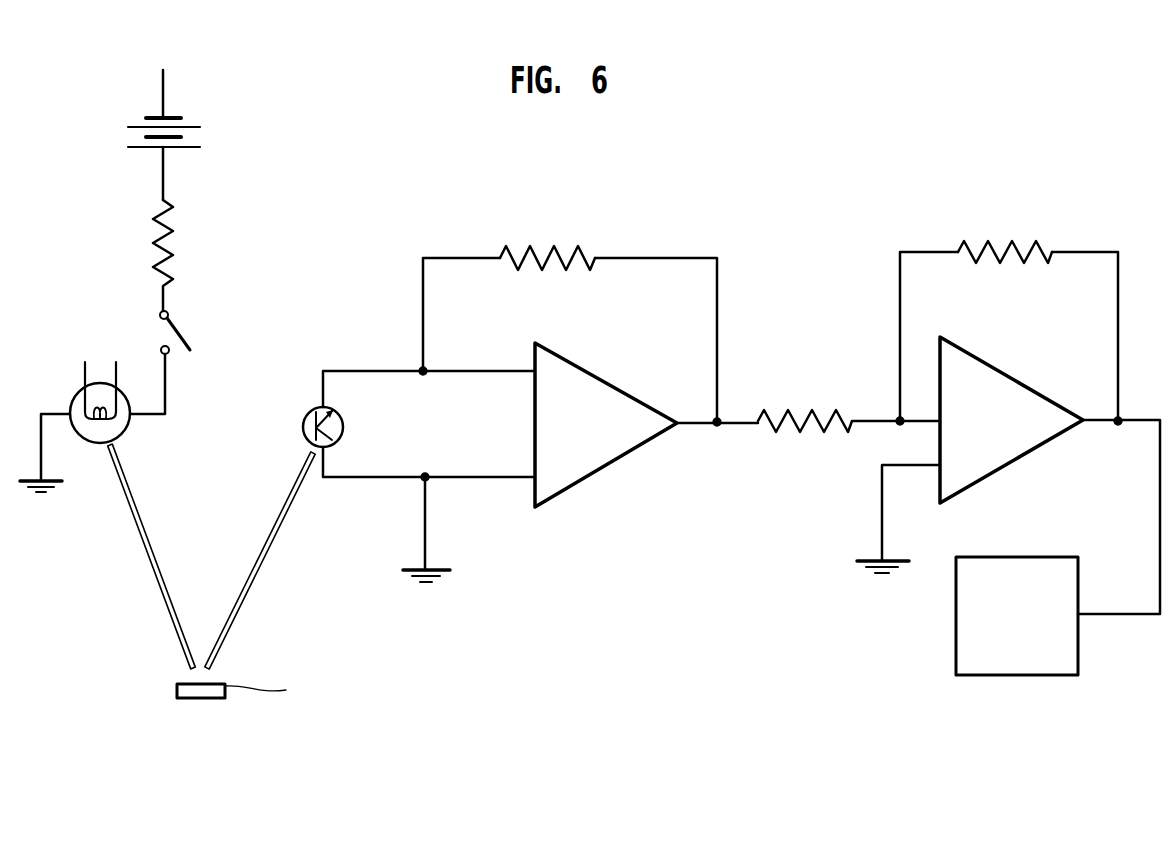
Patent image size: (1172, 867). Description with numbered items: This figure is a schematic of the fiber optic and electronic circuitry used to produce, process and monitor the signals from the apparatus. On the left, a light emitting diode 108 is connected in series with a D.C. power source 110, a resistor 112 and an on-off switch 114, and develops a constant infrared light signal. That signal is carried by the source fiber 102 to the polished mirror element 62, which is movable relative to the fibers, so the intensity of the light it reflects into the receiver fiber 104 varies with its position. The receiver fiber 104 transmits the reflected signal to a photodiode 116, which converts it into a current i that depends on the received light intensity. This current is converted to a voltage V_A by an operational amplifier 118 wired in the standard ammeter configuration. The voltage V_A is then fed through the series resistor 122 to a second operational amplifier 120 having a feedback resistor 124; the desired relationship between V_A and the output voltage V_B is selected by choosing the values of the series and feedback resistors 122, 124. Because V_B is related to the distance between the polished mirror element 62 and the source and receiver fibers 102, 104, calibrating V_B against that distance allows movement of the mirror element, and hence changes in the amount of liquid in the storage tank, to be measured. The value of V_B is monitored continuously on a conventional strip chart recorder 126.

The polished mirror element 62 is at (208, 700).
The source fiber 102 is at (145, 555).
The receiver fiber 104 is at (262, 572).
The light emitting diode 108 is at (128, 434).
The D.C. power source 110 is at (195, 108).
The resistor 112 is at (172, 250).
The on-off switch 114 is at (178, 320).
The photodiode 116 is at (305, 410).
The operational amplifier 118 is at (596, 476).
The operational amplifier 120 is at (1000, 466).
The series resistor 122 is at (780, 415).
The feedback resistor 124 is at (997, 245).
The strip chart recorder 126 is at (1018, 677).